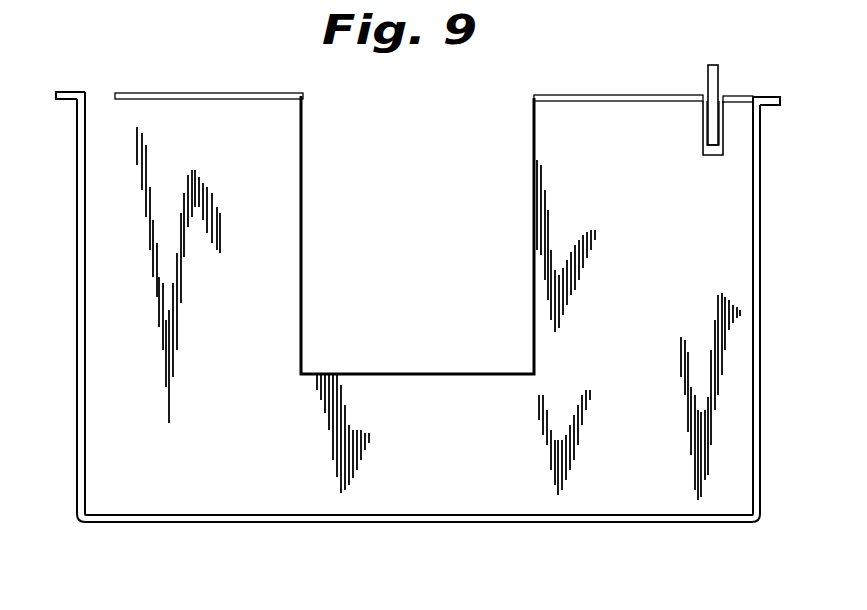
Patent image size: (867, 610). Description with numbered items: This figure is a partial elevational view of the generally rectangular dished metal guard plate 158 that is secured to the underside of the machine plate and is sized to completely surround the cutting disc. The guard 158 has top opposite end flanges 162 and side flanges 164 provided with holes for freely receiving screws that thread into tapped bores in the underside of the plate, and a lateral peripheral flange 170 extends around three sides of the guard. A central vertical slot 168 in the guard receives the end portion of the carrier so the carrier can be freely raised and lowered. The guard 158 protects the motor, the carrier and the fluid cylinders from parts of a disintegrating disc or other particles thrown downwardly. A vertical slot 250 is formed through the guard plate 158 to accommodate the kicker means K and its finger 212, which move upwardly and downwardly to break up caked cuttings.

The guard plate 158 is at (727, 232).
The end flange 162 is at (69, 90).
The side flange 164 is at (217, 93).
The central well 168 is at (532, 262).
The lateral peripheral flange 170 is at (78, 466).
The finger 212 is at (712, 65).
The vertical slot 250 is at (712, 132).
The kicker means K is at (708, 79).